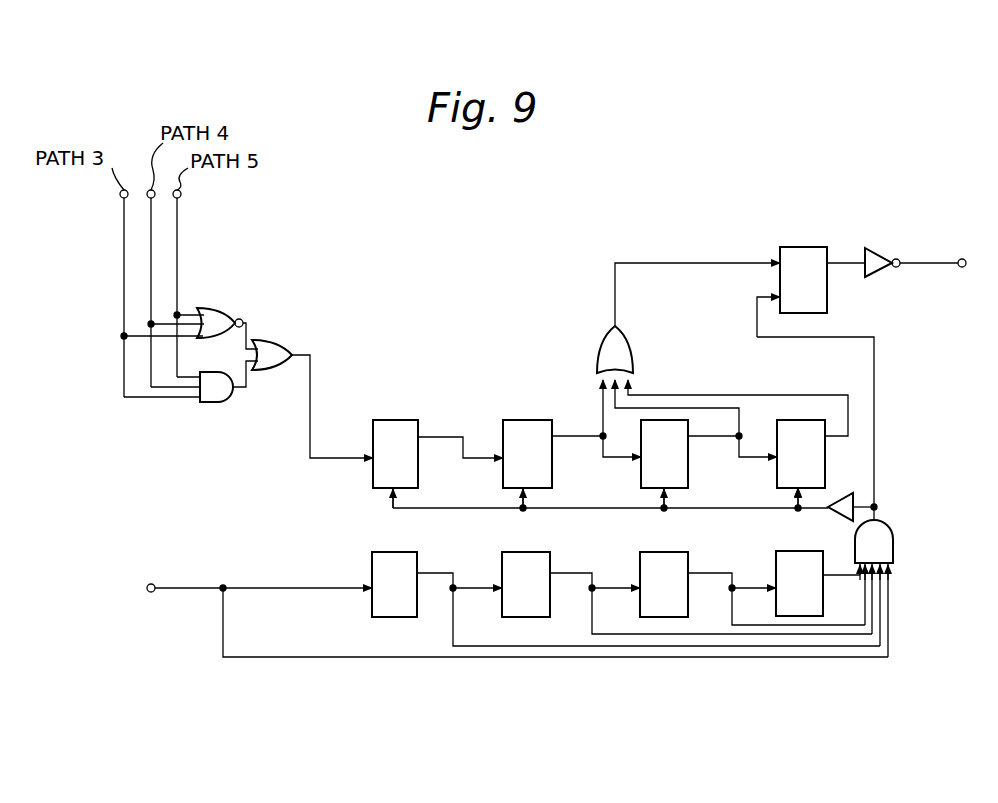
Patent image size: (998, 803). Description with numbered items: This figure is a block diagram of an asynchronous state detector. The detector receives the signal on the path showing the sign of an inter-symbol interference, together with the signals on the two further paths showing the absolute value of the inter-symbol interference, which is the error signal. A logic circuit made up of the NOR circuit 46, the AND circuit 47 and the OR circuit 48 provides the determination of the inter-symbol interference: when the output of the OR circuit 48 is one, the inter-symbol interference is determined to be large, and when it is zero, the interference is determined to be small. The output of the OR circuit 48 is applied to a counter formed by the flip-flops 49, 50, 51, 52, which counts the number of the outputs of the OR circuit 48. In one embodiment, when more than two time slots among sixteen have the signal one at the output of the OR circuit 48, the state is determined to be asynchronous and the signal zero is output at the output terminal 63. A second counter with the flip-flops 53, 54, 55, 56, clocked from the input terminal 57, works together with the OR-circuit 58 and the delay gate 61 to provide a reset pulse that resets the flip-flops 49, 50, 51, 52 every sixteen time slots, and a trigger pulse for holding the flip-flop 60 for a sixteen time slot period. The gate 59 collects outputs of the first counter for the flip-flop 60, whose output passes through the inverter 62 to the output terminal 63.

The NOR circuit 46 is at (212, 306).
The AND circuit 47 is at (214, 404).
The OR circuit 48 is at (281, 336).
The flip-flop 49 is at (396, 417).
The flip-flop 50 is at (523, 417).
The flip-flop 51 is at (641, 473).
The flip-flop 52 is at (777, 473).
The flip-flop 53 is at (404, 551).
The flip-flop 54 is at (530, 551).
The flip-flop 55 is at (666, 551).
The flip-flop 56 is at (785, 551).
The clock input terminal 57 is at (151, 583).
The OR-circuit 58 is at (893, 524).
The OR gate 59 is at (633, 346).
The flip-flop 60 is at (799, 246).
The delay gate 61 is at (843, 492).
The inverter 62 is at (880, 246).
The output terminal 63 is at (962, 258).